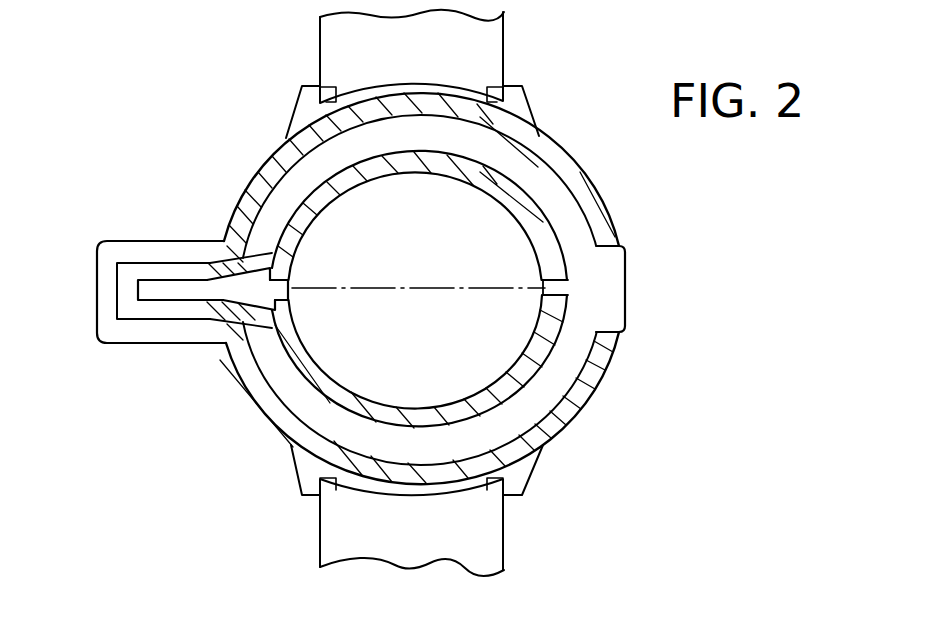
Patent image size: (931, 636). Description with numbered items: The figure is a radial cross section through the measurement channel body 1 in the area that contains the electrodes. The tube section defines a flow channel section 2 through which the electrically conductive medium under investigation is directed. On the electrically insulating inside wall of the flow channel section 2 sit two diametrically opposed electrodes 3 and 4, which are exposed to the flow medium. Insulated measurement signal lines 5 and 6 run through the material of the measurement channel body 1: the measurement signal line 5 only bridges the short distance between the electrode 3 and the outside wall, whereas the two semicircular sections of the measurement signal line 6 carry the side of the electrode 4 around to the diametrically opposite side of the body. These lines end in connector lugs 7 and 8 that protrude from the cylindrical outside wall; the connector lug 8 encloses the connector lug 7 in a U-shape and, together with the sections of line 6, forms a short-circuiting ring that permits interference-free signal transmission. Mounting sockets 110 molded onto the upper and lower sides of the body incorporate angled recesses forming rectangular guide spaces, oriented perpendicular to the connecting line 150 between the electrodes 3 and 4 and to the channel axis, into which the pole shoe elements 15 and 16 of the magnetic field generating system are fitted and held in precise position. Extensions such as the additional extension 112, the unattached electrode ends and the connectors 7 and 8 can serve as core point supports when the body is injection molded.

The measurement channel body 1 is at (603, 208).
The flow channel section 2 is at (395, 353).
The electrode 3 is at (289, 286).
The electrode 4 is at (546, 288).
The measurement signal line 5 is at (250, 283).
The measurement signal line 6 is at (538, 178).
The connector lug 7 is at (153, 285).
The connector lug 8 is at (102, 277).
The pole shoe element 15 is at (483, 38).
The pole shoe element 16 is at (478, 543).
The mounting sockets 110 is at (300, 107).
The additional extension 112 is at (613, 312).
The connecting line 150 is at (424, 262).